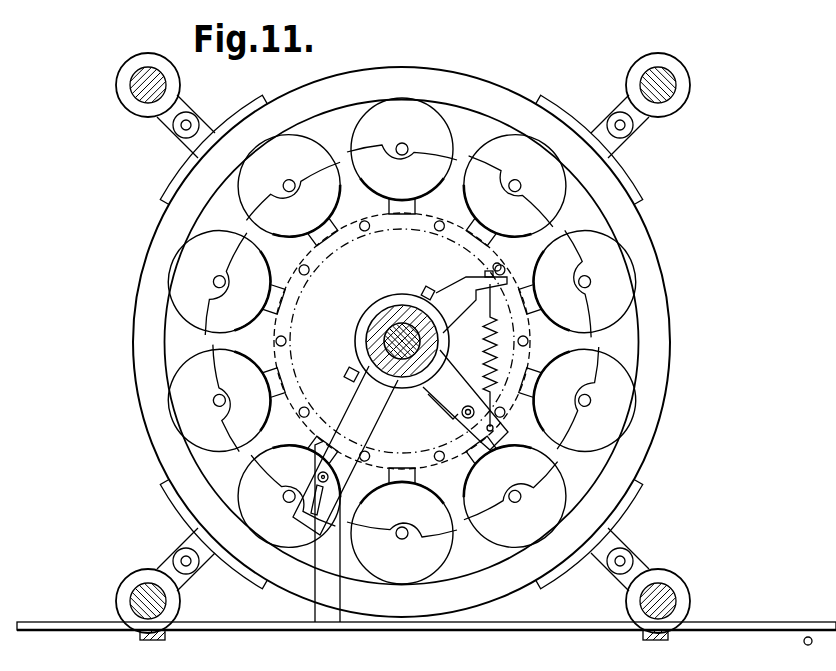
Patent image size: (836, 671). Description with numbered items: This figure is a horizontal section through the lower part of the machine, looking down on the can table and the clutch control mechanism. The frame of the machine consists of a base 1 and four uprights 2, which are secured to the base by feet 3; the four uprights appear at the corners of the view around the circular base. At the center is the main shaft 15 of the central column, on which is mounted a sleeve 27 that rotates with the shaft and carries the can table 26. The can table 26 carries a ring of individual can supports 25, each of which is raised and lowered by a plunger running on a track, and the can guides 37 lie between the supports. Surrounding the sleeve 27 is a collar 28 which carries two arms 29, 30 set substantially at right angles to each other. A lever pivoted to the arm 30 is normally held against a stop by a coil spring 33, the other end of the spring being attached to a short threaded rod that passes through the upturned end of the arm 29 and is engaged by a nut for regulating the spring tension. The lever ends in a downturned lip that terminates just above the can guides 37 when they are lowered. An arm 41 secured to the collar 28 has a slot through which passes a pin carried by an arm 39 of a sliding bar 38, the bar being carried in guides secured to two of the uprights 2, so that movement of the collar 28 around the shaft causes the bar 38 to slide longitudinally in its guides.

The base 1 is at (401, 342).
The uprights 2 is at (146, 83).
The feet 3 is at (172, 135).
The main shaft 15 is at (388, 347).
The can supports 25 is at (402, 341).
The can table 26 is at (402, 341).
The sleeve 27 is at (380, 316).
The collar 28 is at (392, 294).
The arm 29 is at (466, 292).
The arm 30 is at (457, 391).
The coil spring 33 is at (497, 359).
The can guides 37 is at (383, 326).
The sliding bar 38 is at (526, 631).
The arm 39 is at (323, 589).
The arm 41 is at (350, 441).